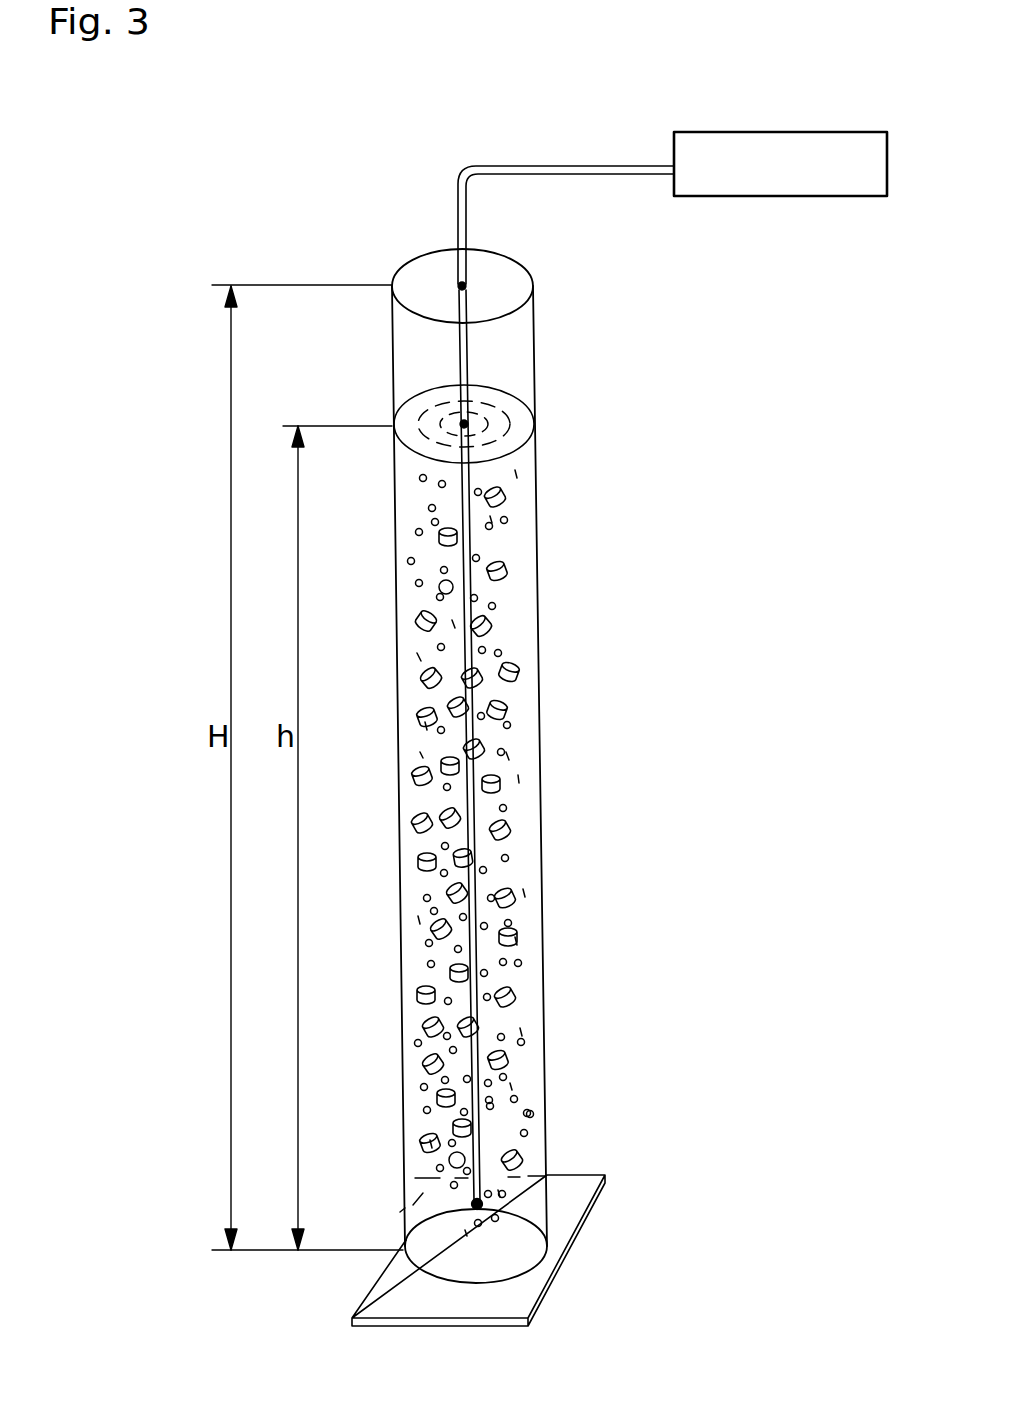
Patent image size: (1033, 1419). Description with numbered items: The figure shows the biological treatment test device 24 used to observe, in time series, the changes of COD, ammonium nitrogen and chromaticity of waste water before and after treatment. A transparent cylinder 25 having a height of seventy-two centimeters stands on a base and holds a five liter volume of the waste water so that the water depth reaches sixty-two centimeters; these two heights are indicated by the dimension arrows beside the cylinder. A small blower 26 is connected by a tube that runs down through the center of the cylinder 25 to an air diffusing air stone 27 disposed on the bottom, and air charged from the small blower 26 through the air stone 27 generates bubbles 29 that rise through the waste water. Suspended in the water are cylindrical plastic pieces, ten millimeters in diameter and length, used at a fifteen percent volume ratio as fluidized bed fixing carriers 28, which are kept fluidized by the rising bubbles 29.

The test device 24 is at (398, 256).
The transparent cylinder 25 is at (528, 374).
The small blower 26 is at (778, 197).
The air diffusing air stone 27 is at (493, 1217).
The fluidized bed fixing carriers 28 is at (502, 578).
The bubbles 29 is at (509, 858).